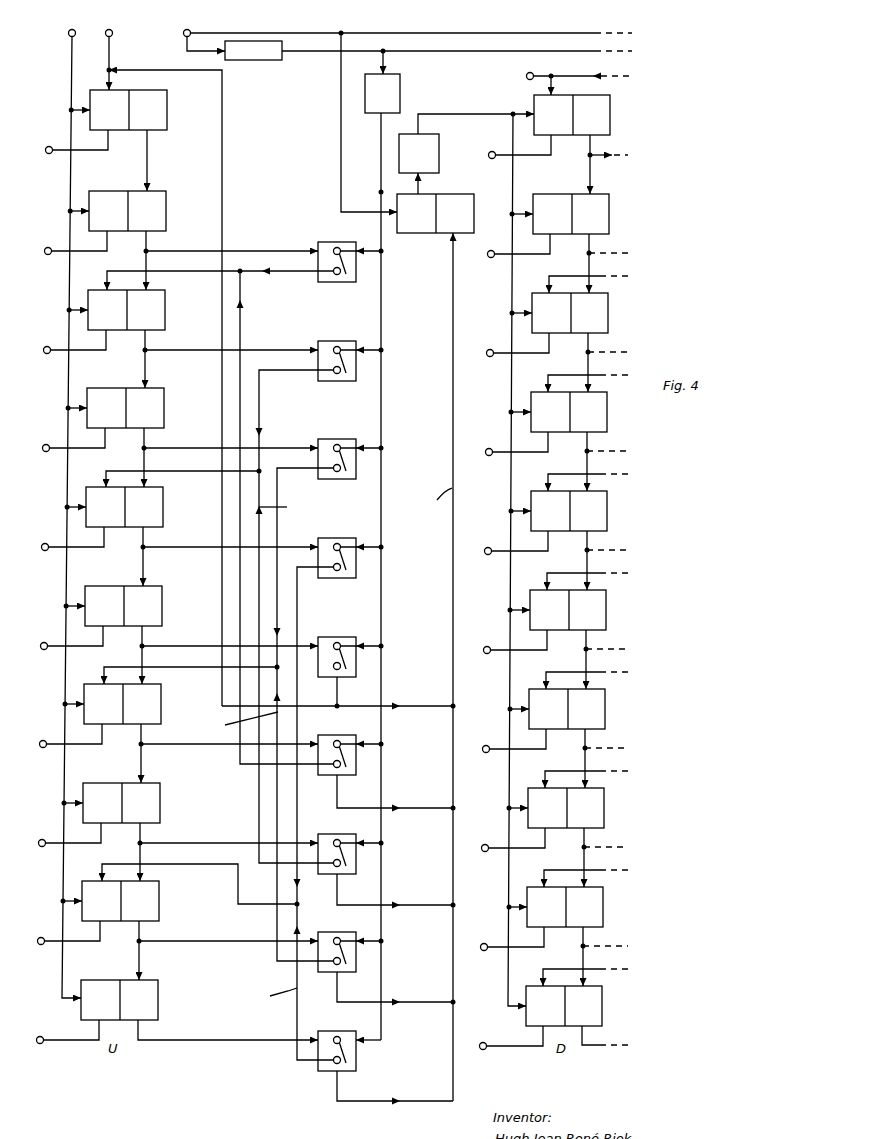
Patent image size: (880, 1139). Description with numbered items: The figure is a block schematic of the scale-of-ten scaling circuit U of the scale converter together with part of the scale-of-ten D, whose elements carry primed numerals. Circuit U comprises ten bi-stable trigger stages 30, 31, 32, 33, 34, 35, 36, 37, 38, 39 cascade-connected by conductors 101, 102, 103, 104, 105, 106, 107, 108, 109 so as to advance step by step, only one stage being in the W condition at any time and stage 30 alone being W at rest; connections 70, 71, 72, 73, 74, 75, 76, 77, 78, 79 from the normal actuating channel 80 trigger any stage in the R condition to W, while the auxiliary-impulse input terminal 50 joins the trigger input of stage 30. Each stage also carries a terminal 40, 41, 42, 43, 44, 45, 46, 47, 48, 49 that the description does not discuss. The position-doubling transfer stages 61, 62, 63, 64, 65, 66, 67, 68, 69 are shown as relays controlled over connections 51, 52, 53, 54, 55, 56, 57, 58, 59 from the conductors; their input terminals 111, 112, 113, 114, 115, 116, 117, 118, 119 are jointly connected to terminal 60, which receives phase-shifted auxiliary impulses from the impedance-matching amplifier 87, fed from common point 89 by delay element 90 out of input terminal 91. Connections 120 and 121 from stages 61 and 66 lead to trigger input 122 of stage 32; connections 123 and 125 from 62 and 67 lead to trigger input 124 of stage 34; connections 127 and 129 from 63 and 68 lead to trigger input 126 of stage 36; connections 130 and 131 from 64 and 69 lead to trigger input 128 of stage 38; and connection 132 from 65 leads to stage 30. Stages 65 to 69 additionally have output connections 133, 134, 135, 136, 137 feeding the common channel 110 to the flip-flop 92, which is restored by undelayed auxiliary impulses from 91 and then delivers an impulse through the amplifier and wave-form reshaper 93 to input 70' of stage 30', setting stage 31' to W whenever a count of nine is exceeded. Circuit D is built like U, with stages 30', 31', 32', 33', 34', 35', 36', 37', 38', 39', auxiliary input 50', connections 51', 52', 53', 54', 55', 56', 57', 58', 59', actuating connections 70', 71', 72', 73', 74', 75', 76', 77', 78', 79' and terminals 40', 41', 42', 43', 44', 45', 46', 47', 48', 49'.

The bi-stable trigger stage 30 is at (139, 110).
The bi-stable trigger stage 31 is at (138, 211).
The bi-stable trigger stage 32 is at (137, 310).
The bi-stable trigger stage 33 is at (136, 408).
The bi-stable trigger stage 34 is at (135, 507).
The bi-stable trigger stage 35 is at (134, 606).
The bi-stable trigger stage 36 is at (133, 704).
The bi-stable trigger stage 37 is at (132, 803).
The bi-stable trigger stage 38 is at (131, 901).
The bi-stable trigger stage 39 is at (130, 1000).
The bi-stable trigger stage of scaling circuit D 30' is at (585, 115).
The bi-stable trigger stage of scaling circuit D 31' is at (584, 214).
The bi-stable trigger stage of scaling circuit D 32' is at (583, 313).
The bi-stable trigger stage of scaling circuit D 33' is at (582, 412).
The bi-stable trigger stage of scaling circuit D 34' is at (582, 511).
The bi-stable trigger stage of scaling circuit D 35' is at (581, 610).
The bi-stable trigger stage of scaling circuit D 36' is at (580, 709).
The bi-stable trigger stage of scaling circuit D 37' is at (579, 808).
The bi-stable trigger stage of scaling circuit D 38' is at (578, 907).
The bi-stable trigger stage of scaling circuit D 39' is at (577, 1006).
The output terminal of stage 30 40 is at (70, 150).
The output terminal of stage 31 41 is at (69, 251).
The output terminal of stage 32 42 is at (68, 350).
The output terminal of stage 33 43 is at (67, 448).
The output terminal of stage 34 44 is at (66, 547).
The output terminal of stage 35 45 is at (65, 646).
The output terminal of stage 36 46 is at (64, 744).
The output terminal of stage 37 47 is at (63, 843).
The output terminal of stage 38 48 is at (62, 941).
The output terminal of stage 39 49 is at (61, 1040).
The output terminal of stage 30' 40' is at (514, 155).
The output terminal of stage 31' 41' is at (513, 254).
The output terminal of stage 32' 42' is at (512, 353).
The output terminal of stage 33' 43' is at (511, 452).
The output terminal of stage 34' 44' is at (511, 551).
The output terminal of stage 35' 45' is at (510, 650).
The output terminal of stage 36' 46' is at (509, 749).
The output terminal of stage 37' 47' is at (508, 848).
The output terminal of stage 38' 48' is at (507, 947).
The output terminal of stage 39' 49' is at (506, 1046).
The input terminal for auxiliary impulses 50 is at (111, 50).
The input terminal for auxiliary impulses of scaling circuit D 50' is at (566, 82).
The control connection 51 is at (231, 244).
The control connection 52 is at (231, 343).
The control connection 53 is at (230, 441).
The control connection 54 is at (230, 540).
The control connection 55 is at (229, 639).
The control connection 56 is at (229, 737).
The control connection 57 is at (228, 836).
The control connection 58 is at (228, 934).
The control connection 59 is at (228, 1030).
The control connection of scaling circuit D 51' is at (608, 263).
The control connection of scaling circuit D 52' is at (607, 362).
The control connection of scaling circuit D 53' is at (607, 461).
The control connection of scaling circuit D 54' is at (607, 560).
The control connection of scaling circuit D 55' is at (606, 659).
The control connection of scaling circuit D 56' is at (606, 758).
The control connection of scaling circuit D 57' is at (605, 857).
The control connection of scaling circuit D 58' is at (605, 956).
The control connection of scaling circuit D 59' is at (605, 1035).
The input terminal for auxiliary impulses 60 is at (368, 576).
The transfer stage 61 is at (337, 253).
The transfer stage 62 is at (337, 352).
The transfer stage 63 is at (337, 450).
The transfer stage 64 is at (337, 549).
The transfer stage 65 is at (337, 648).
The transfer stage 66 is at (337, 746).
The transfer stage 67 is at (337, 845).
The transfer stage 68 is at (337, 943).
The transfer stage 69 is at (337, 1042).
The connection from actuating channel 70 is at (65, 110).
The connection from actuating channel 71 is at (64, 211).
The connection from actuating channel 72 is at (63, 310).
The connection from actuating channel 73 is at (62, 408).
The connection from actuating channel 74 is at (61, 507).
The connection from actuating channel 75 is at (60, 606).
The connection from actuating channel 76 is at (59, 704).
The connection from actuating channel 77 is at (58, 803).
The connection from actuating channel 78 is at (57, 901).
The connection from actuating channel 79 is at (41, 1007).
The input connection to stage 30' 70' is at (476, 551).
The actuating connection of scaling circuit D 71' is at (507, 214).
The actuating connection of scaling circuit D 72' is at (507, 313).
The actuating connection of scaling circuit D 73' is at (506, 412).
The actuating connection of scaling circuit D 74' is at (506, 511).
The actuating connection of scaling circuit D 75' is at (505, 610).
The actuating connection of scaling circuit D 76' is at (504, 709).
The actuating connection of scaling circuit D 77' is at (503, 808).
The actuating connection of scaling circuit D 78' is at (503, 907).
The actuating connection of scaling circuit D 79' is at (488, 1013).
The normal actuating channel 80 is at (63, 506).
The impedance-matching amplifier 87 is at (382, 93).
The common point 89 is at (395, 62).
The delay element 90 is at (428, 50).
The input terminal 91 is at (407, 30).
The bi-stable trigger circuit 92 is at (407, 143).
The combined amplifier and wave-form reshaper 93 is at (419, 164).
The conductor 101 is at (130, 160).
The conductor 102 is at (129, 260).
The conductor 103 is at (128, 359).
The conductor 104 is at (127, 457).
The conductor 105 is at (126, 556).
The conductor 106 is at (125, 655).
The conductor 107 is at (124, 753).
The conductor 108 is at (123, 852).
The conductor 109 is at (122, 950).
The common channel 110 is at (439, 667).
The input terminal of transfer stage 111 is at (376, 251).
The input terminal of transfer stage 112 is at (376, 350).
The input terminal of transfer stage 113 is at (376, 448).
The input terminal of transfer stage 114 is at (376, 547).
The input terminal of transfer stage 115 is at (376, 646).
The input terminal of transfer stage 116 is at (376, 744).
The input terminal of transfer stage 117 is at (377, 843).
The input terminal of transfer stage 118 is at (376, 941).
The input terminal of transfer stage 119 is at (384, 1040).
The output connection 120 is at (287, 279).
The output connection 121 is at (285, 517).
The trigger input 122 is at (173, 272).
The output connection 123 is at (295, 616).
The trigger input 124 is at (184, 470).
The output connection 125 is at (285, 507).
The trigger input 126 is at (192, 667).
The output connection 127 is at (304, 714).
The trigger input 128 is at (201, 877).
The output connection 129 is at (240, 727).
The output connection 130 is at (314, 813).
The output connection 131 is at (281, 1000).
The output connection 132 is at (180, 387).
The output connection 133 is at (339, 693).
The output connection 134 is at (396, 793).
The output connection 135 is at (396, 891).
The output connection 136 is at (396, 989).
The output connection 137 is at (395, 1088).